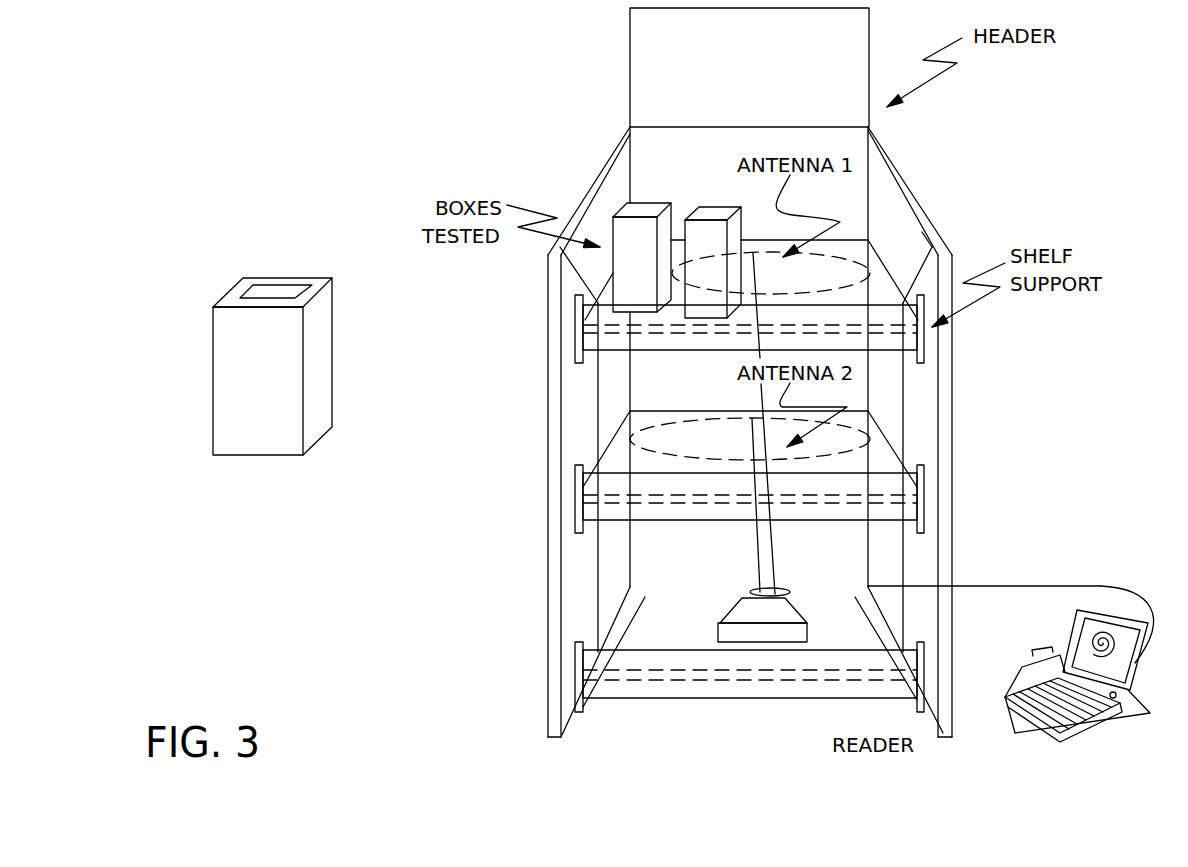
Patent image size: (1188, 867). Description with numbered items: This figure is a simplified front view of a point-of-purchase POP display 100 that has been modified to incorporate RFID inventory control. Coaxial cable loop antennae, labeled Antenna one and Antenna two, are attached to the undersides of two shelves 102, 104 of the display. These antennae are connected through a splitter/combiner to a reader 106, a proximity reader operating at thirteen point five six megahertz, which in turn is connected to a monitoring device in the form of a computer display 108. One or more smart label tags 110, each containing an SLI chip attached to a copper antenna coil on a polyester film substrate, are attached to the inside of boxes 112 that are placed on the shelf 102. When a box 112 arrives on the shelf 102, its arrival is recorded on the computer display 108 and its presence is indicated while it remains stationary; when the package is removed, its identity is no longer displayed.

The POP display 100 is at (568, 102).
The shelf 102 is at (876, 272).
The shelf 104 is at (885, 461).
The reader 106 is at (785, 655).
The computer display 108 is at (1040, 738).
The tag 110 is at (223, 244).
The box 112 is at (230, 309).